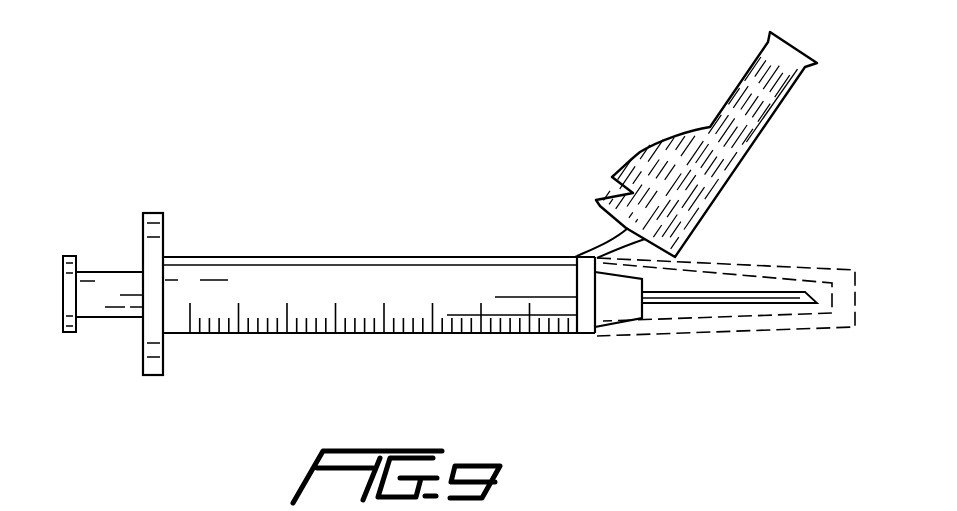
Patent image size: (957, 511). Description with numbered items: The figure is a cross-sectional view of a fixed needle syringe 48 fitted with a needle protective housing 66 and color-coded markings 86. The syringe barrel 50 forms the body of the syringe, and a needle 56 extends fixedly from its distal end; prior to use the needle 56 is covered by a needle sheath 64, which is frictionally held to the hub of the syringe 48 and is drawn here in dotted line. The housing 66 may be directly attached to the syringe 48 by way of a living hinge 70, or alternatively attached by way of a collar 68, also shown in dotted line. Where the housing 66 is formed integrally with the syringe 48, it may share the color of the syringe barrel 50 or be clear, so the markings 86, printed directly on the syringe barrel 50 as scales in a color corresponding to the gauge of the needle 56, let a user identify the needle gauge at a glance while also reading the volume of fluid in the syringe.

The fixed needle syringe 48 is at (305, 195).
The syringe barrel body 50 is at (368, 257).
The needle 56 is at (742, 303).
The needle sheath 64 is at (788, 270).
The housing 66 is at (732, 95).
The collar 68 is at (596, 334).
The living hinge 70 is at (595, 248).
The markings 86 is at (577, 352).